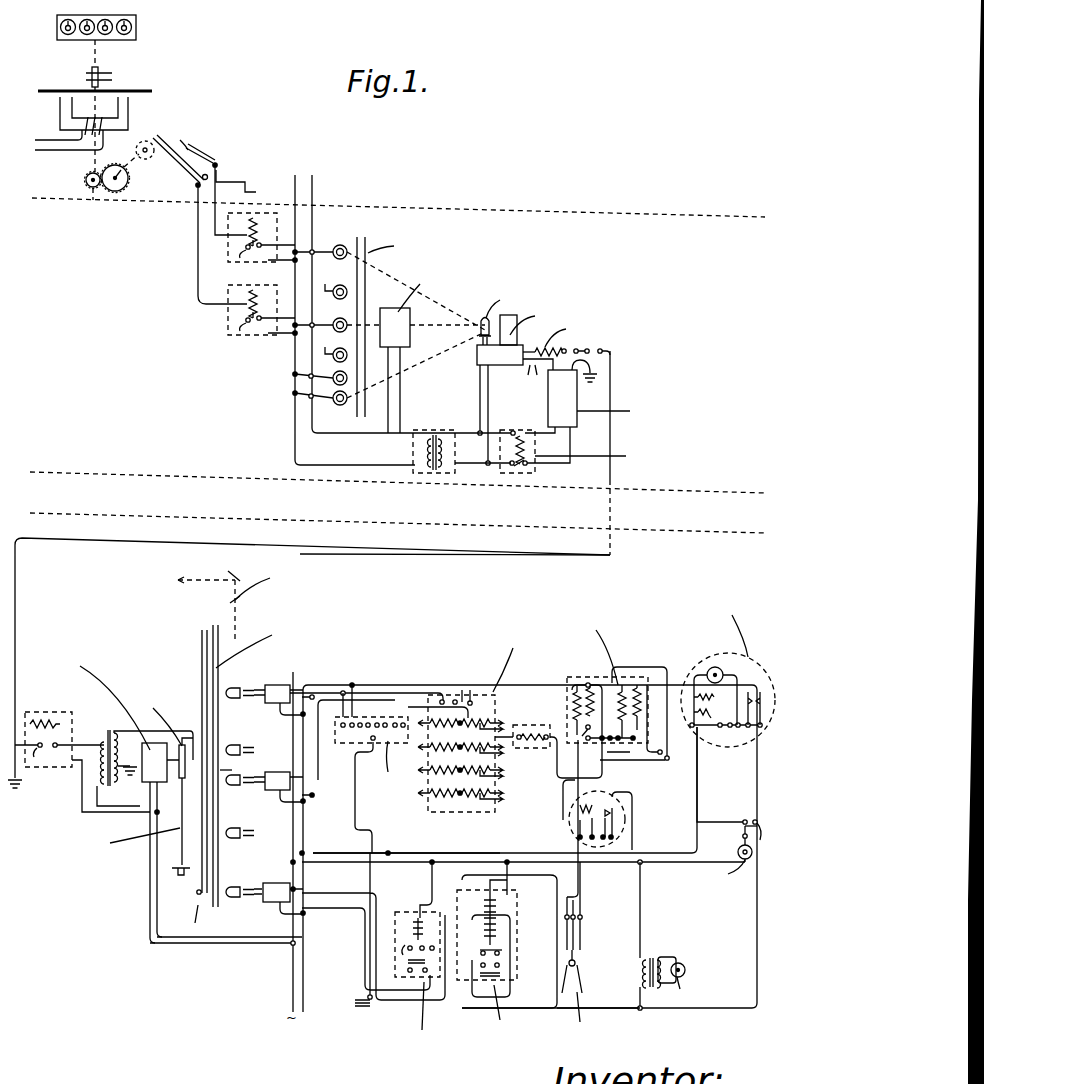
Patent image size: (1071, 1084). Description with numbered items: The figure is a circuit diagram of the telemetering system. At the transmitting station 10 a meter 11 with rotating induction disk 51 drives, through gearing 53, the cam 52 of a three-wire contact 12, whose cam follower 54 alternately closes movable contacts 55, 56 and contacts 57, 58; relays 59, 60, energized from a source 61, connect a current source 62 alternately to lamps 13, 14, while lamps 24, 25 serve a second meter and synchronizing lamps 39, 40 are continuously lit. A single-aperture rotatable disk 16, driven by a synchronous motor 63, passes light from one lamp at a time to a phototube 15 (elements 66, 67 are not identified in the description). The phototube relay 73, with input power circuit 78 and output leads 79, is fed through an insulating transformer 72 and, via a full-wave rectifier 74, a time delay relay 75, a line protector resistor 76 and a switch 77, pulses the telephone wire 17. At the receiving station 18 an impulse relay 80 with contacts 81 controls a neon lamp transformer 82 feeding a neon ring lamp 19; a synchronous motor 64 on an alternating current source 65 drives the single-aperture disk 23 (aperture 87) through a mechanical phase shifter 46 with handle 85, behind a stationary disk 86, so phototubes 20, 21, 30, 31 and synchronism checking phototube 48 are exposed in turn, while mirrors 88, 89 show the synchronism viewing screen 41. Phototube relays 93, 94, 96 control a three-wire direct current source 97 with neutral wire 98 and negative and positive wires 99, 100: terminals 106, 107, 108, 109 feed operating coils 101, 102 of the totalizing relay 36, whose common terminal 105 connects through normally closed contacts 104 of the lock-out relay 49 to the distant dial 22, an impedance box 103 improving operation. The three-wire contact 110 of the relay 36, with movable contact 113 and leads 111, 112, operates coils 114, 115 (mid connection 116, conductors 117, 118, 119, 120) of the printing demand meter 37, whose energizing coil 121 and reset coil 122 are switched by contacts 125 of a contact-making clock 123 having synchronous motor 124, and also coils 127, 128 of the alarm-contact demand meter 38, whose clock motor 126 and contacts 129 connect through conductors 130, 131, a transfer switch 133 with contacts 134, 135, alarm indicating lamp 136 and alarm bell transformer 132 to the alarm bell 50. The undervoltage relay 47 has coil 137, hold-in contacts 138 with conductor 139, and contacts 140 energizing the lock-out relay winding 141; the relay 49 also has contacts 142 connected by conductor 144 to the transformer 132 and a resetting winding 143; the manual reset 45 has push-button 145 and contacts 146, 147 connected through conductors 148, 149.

The transmitting station 10 is at (162, 320).
The meter 11 is at (133, 68).
The three-wire contact making device 12 is at (198, 234).
The lamp 13 is at (338, 245).
The lamp 14 is at (336, 318).
The photoelectric tube 15 is at (480, 322).
The rotatable disk 16 is at (367, 298).
The telephone wire 17 is at (459, 553).
The receiving station 18 is at (115, 959).
The lamp 19 is at (197, 887).
The photoelectric tube 20 is at (235, 702).
The photoelectric tube 21 is at (240, 788).
The distant dial 22 is at (533, 748).
The rotating-disk shutter means 23 is at (245, 684).
The lamp 24 is at (336, 287).
The lamp 25 is at (335, 351).
The phototube 30 is at (238, 745).
The phototube 31 is at (238, 829).
The totalizing relay 36 is at (493, 700).
The printing demand meter 37 is at (568, 679).
The alarm-contact-operating demand meter 38 is at (770, 660).
The synchronizing lamp 39 is at (340, 406).
The synchronizing lamp 40 is at (336, 374).
The synchronism-checking viewing screen 41 is at (219, 605).
The manual reset 45 is at (583, 937).
The mechanical phase shifter 46 is at (180, 780).
The undervoltage relay 47 is at (440, 980).
The synchronism checking photoelectric tube 48 is at (238, 887).
The lock-out relay 49 is at (515, 968).
The alarm bell 50 is at (686, 967).
The rotating induction disk 51 is at (148, 91).
The rotating cam 52 is at (145, 141).
The gearing 53 is at (106, 192).
The cam follower 54 is at (160, 163).
The movable contact 55 is at (178, 145).
The second movable contact 56 is at (192, 147).
The third movable contact 57 is at (198, 152).
The stationary contact 58 is at (206, 164).
The relay 59 is at (272, 235).
The relay 60 is at (272, 284).
The source 61 is at (242, 181).
The current source 62 is at (314, 184).
The synchronous motor 63 is at (427, 353).
The synchronous motor 64 is at (150, 807).
The alternating current source 65 is at (291, 971).
The light beam 66 is at (368, 271).
The disc aperture 67 is at (358, 245).
The insulating transformer 72 is at (445, 428).
The phototube relay 73 is at (505, 356).
The full-wave copper oxide rectifier 74 is at (628, 416).
The time delay relay 75 is at (520, 428).
The line protector resistor 76 is at (570, 345).
The switch 77 is at (603, 349).
The input power circuit 78 is at (480, 383).
The output leads 79 is at (527, 376).
The impulse relay 80 is at (57, 712).
The contacts 81 is at (50, 755).
The neon lamp transformer 82 is at (105, 730).
The handle 85 is at (180, 842).
The stationary disk 86 is at (234, 765).
The aperture 87 is at (203, 678).
The mirror 88 is at (235, 640).
The mirror 89 is at (246, 565).
The phototube relay 93 is at (306, 686).
The phototube relay 94 is at (285, 787).
The phototube relay 96 is at (284, 899).
The three-wire direct current source 97 is at (371, 1009).
The neutral wire 98 is at (370, 880).
The negative wire 99 is at (325, 902).
The positive wire 100 is at (323, 915).
The operating coil 101 is at (440, 725).
The operating coil 102 is at (470, 716).
The impedance box 103 is at (340, 748).
The normally closed contacts 104 is at (500, 952).
The common terminal 105 is at (460, 727).
The output terminal 106 is at (298, 714).
The output terminal 107 is at (285, 793).
The output terminal 108 is at (284, 684).
The output terminal 109 is at (302, 773).
The three-wire contact device 110 is at (462, 690).
The lead 111 is at (455, 690).
The lead 112 is at (472, 680).
The movable contact 113 is at (442, 707).
The operating coil 114 is at (625, 703).
The operating coil 115 is at (637, 710).
The mid connection 116 is at (632, 682).
The conductor 117 is at (660, 760).
The conductor 118 is at (698, 782).
The conductor 119 is at (412, 865).
The conductor 120 is at (385, 681).
The energizing coil 121 is at (587, 730).
The reset coil 122 is at (577, 697).
The contact-making clock 123 is at (625, 799).
The synchronous motor 124 is at (584, 805).
The contacts 125 is at (615, 825).
The synchronous clock motor 126 is at (722, 672).
The coil 127 is at (717, 689).
The coil 128 is at (706, 722).
The contacts 129 is at (757, 690).
The conductor 130 is at (410, 853).
The conductor 131 is at (757, 917).
The alarm bell transformer 132 is at (655, 955).
The transfer switch 133 is at (750, 818).
The normally closed contact 134 is at (762, 840).
The normally open contact 135 is at (742, 838).
The alarm indicating lamp 136 is at (738, 854).
The energizing coil 137 is at (418, 918).
The contacts 138 is at (408, 948).
The conductor 139 is at (443, 875).
The contacts 140 is at (417, 975).
The energizing winding 141 is at (498, 927).
The normally open contacts 142 is at (500, 977).
The resetting winding 143 is at (497, 898).
The conductor 144 is at (617, 1007).
The push-button 145 is at (574, 997).
The normally open contacts 146 is at (530, 960).
The normally open contacts 147 is at (582, 953).
The conductor 148 is at (505, 893).
The conductor 149 is at (582, 972).